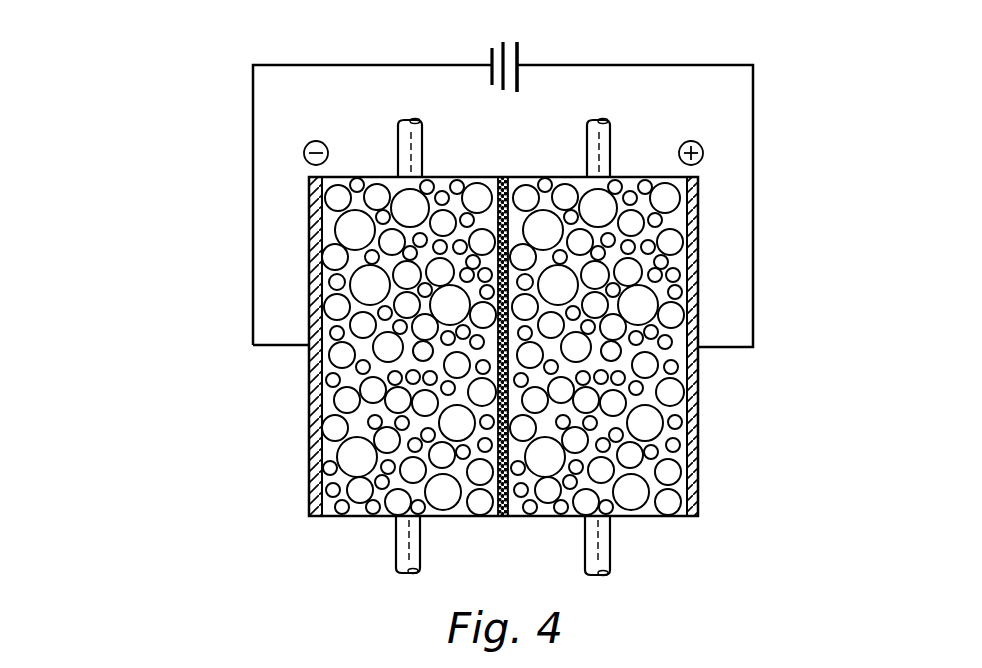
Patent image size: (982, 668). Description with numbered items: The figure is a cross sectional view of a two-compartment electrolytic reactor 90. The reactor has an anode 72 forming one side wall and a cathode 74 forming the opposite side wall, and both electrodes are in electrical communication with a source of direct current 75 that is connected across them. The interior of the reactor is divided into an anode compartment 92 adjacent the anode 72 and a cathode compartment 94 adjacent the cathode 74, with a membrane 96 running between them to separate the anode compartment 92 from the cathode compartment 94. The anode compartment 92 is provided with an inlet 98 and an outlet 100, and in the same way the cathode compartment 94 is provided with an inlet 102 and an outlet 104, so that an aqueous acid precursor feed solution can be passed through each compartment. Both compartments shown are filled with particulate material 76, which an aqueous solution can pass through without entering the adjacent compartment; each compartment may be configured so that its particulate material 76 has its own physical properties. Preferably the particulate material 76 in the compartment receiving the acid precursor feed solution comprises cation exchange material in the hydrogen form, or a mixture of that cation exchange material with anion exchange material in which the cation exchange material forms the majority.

The two-compartment electrolytic reactor 90 is at (216, 473).
The source of direct current 75 is at (518, 52).
The cathode 74 is at (310, 428).
The anode 72 is at (700, 432).
The particulate material 76 is at (582, 230).
The membrane 96 is at (503, 518).
The outlet 104 is at (397, 153).
The outlet 100 is at (613, 150).
The inlet 102 is at (421, 540).
The inlet 98 is at (586, 545).
The cathode compartment 94 is at (357, 514).
The anode compartment 92 is at (652, 512).